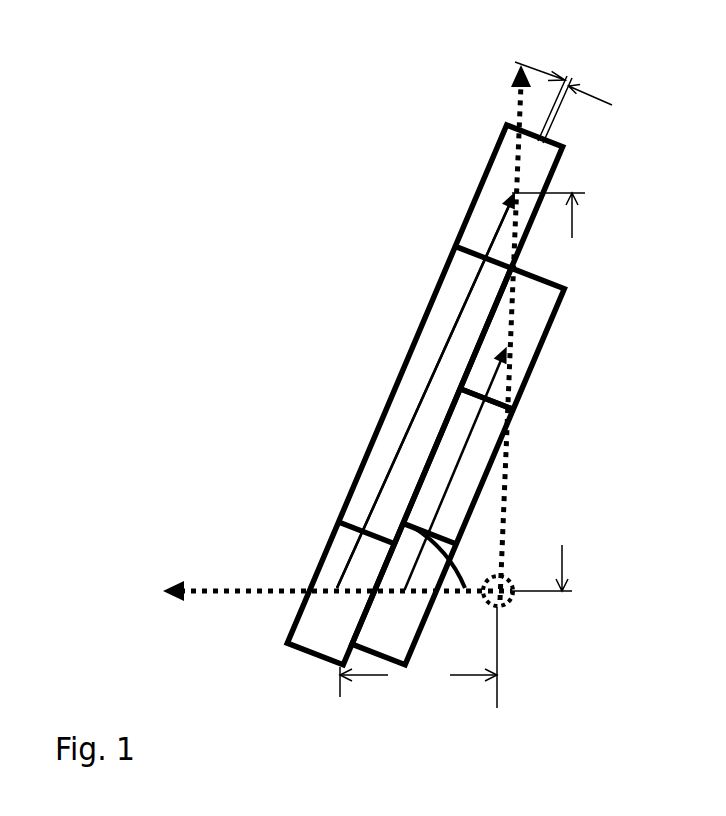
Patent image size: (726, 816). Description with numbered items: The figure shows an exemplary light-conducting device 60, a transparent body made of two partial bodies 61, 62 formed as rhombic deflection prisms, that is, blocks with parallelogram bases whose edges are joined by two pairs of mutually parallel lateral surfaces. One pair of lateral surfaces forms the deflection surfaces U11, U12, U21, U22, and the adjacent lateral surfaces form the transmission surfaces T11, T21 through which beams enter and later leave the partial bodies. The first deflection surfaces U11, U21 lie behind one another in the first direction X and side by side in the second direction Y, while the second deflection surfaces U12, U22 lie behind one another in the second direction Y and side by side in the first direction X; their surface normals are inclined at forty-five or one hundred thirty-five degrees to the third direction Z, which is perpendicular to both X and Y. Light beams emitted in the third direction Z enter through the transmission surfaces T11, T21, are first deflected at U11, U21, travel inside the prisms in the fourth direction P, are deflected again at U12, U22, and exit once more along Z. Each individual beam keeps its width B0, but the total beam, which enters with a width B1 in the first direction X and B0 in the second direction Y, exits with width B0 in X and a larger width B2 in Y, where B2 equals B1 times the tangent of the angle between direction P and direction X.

The light-conducting device 60 is at (350, 212).
The transmission surface T11 is at (414, 340).
The transmission surface T21 is at (483, 482).
The first deflection surface U11 is at (311, 588).
The second deflection surface U12 is at (480, 188).
The first deflection surface U21 is at (435, 600).
The second deflection surface U22 is at (534, 276).
The fourth direction P is at (418, 405).
The partial body 61 is at (347, 640).
The partial body 62 is at (406, 640).
The individual beam width B0 is at (563, 85).
The entering total beam width B1 is at (418, 664).
The exiting total beam width B2 is at (530, 387).
The first direction X is at (337, 616).
The second direction Y is at (500, 330).
The third direction Z is at (518, 615).